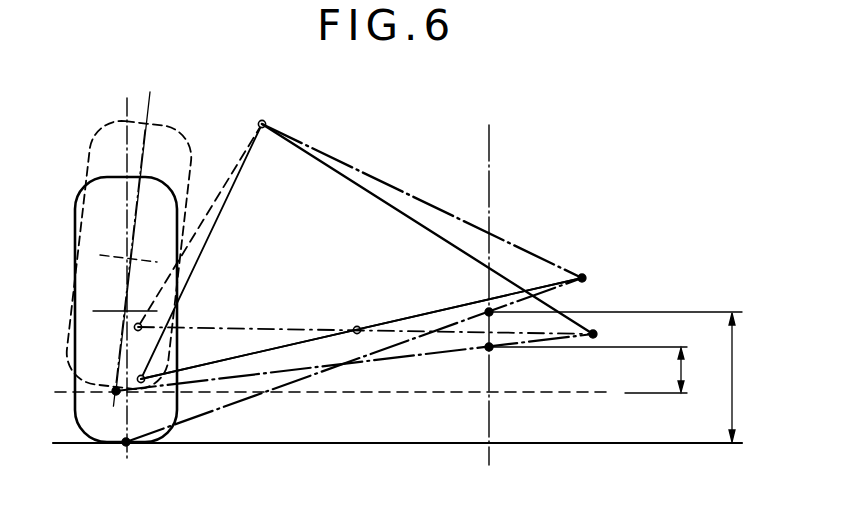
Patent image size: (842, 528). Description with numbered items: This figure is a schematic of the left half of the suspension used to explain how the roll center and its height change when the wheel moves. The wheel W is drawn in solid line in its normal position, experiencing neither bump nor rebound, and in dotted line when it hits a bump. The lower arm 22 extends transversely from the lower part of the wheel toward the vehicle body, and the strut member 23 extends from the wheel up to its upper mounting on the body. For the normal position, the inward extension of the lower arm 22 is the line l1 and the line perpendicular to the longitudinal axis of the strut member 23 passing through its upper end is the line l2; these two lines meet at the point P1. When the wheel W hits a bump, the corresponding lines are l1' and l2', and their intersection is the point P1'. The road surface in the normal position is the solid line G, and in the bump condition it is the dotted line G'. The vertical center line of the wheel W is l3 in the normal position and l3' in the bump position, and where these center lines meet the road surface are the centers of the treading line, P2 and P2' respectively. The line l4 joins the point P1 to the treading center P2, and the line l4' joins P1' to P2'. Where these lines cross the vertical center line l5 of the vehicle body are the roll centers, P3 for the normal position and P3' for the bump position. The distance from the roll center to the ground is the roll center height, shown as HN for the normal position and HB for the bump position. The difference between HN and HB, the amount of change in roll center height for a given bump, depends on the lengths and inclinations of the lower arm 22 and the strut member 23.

The wheel W is at (93, 150).
The lower arm 22 is at (243, 356).
The strut member 23 is at (202, 224).
The road surface line G is at (397, 429).
The road surface line when wheel hits a bump G' is at (357, 413).
The intersection point P1 is at (607, 269).
The intersection point when wheel hits a bump P1' is at (619, 334).
The center of the treading line P2 is at (109, 470).
The center of the treading line when wheel hits a bump P2' is at (101, 414).
The roll center P3 is at (465, 290).
The roll center when wheel hits a bump P3' is at (515, 365).
The inward extension of the lower arm l1 is at (361, 328).
The inward extension of the lower arm when wheel hits a bump l1' is at (365, 308).
The line perpendicular to the strut axis l2 is at (422, 201).
The line perpendicular to the strut axis when wheel hits a bump l2' is at (427, 229).
The vertical center line of the wheel l3 is at (109, 279).
The vertical center line of the wheel when wheel hits a bump l3' is at (150, 248).
The line joining P1 and the center of the treading line l4 is at (354, 360).
The line joining P1' and the center of the treading line when wheel hits a bump l4' is at (354, 380).
The vertical center line of the vehicle body l5 is at (491, 177).
The roll center height when wheel hits a bump HB is at (600, 370).
The roll center height in normal position HN is at (618, 377).